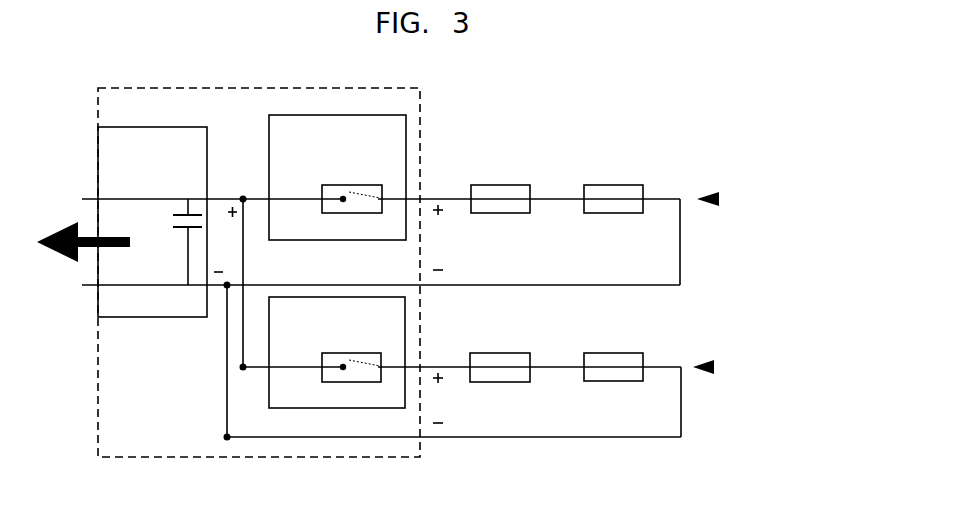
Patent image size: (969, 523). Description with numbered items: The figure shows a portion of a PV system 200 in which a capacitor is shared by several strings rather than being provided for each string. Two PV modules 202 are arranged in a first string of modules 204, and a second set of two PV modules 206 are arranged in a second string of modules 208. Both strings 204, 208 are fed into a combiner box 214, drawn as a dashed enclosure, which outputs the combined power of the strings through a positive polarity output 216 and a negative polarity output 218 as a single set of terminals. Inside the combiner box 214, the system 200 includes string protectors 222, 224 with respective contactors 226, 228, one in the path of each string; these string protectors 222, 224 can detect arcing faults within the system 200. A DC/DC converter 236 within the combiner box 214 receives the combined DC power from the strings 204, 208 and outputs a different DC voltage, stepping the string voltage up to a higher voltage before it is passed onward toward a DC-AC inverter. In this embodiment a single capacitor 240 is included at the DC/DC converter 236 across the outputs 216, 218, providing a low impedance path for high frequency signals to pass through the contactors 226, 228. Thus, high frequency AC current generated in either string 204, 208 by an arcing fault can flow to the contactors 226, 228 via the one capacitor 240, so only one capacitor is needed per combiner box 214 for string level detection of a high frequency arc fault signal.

The PV system 200 is at (628, 90).
The PV modules 202 is at (503, 185).
The first string of modules 204 is at (717, 199).
The PV modules 206 is at (500, 353).
The second string of modules 208 is at (712, 367).
The combiner box 214 is at (422, 120).
The positive polarity output 216 is at (219, 197).
The negative polarity output 218 is at (217, 290).
The string protector 222 is at (366, 115).
The string protector 224 is at (384, 408).
The contactor 226 is at (340, 185).
The contactor 228 is at (342, 353).
The DC/DC converter 236 is at (134, 127).
The capacitor 240 is at (176, 240).